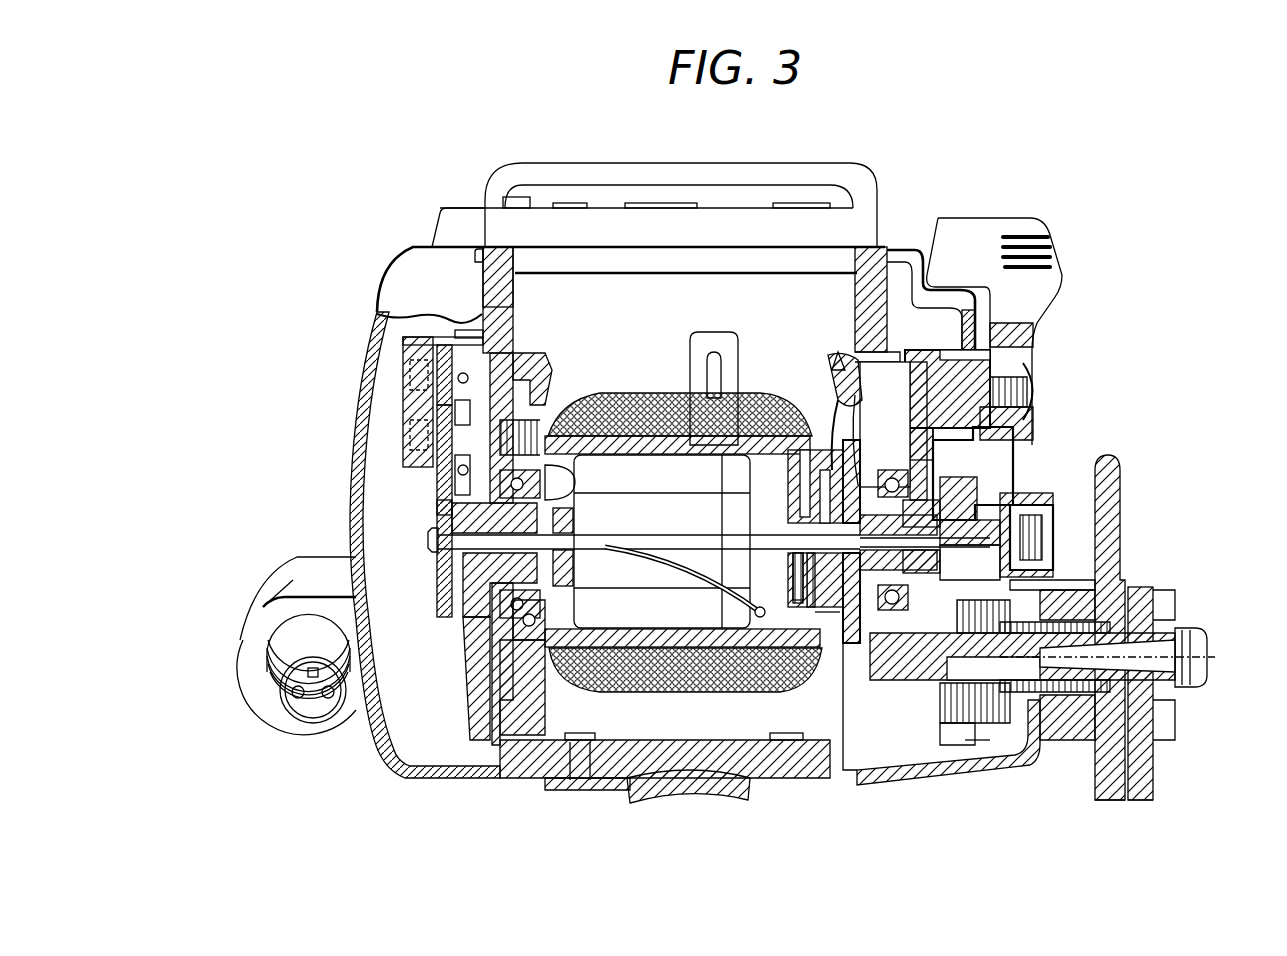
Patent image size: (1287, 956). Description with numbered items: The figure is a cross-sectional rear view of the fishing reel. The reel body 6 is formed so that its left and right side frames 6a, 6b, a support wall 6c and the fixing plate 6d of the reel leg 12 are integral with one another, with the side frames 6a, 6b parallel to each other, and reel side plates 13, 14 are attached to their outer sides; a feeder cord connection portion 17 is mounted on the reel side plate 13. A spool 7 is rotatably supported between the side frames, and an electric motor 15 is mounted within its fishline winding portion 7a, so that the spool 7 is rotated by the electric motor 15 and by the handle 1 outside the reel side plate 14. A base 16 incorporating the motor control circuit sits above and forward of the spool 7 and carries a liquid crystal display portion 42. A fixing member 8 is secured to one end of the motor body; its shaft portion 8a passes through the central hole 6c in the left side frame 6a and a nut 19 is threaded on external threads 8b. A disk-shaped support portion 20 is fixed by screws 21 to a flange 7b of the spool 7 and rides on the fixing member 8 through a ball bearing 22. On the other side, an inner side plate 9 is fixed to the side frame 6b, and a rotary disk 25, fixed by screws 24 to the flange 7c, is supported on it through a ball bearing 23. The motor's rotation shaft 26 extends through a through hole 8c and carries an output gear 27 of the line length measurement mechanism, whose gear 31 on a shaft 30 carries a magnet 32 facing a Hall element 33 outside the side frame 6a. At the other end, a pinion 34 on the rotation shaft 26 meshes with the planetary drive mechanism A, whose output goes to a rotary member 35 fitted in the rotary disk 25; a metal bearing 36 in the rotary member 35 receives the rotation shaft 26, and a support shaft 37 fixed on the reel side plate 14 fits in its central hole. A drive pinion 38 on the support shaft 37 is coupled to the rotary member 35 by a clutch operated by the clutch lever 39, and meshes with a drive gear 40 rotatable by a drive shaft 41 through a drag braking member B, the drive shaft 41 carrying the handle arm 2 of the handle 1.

The handle 1 is at (1155, 792).
The handle arm 2 is at (1150, 778).
The reel body 6 is at (434, 210).
The left side frame 6a is at (488, 263).
The right side frame 6b is at (870, 253).
The support wall 6c is at (443, 498).
The fixing plate 6d is at (533, 770).
The spool 7 is at (526, 348).
The fishline winding portion 7a is at (668, 440).
The flange 7b is at (542, 375).
The flange 7c is at (844, 352).
The fixing member 8 is at (548, 732).
The shaft portion 8a is at (437, 527).
The external threads 8b is at (440, 522).
The through hole 8c is at (470, 657).
The inner side plate 9 is at (908, 350).
The reel leg 12 is at (630, 793).
The reel side plate 13 is at (362, 370).
The reel side plate 14 is at (902, 250).
The electric motor 15 is at (620, 463).
The base 16 is at (450, 212).
The feeder cord connection portion 17 is at (267, 668).
The nut 19 is at (447, 588).
The support portion 20 is at (484, 249).
The screws 21 is at (468, 330).
The ball bearing 22 is at (488, 733).
The ball bearing 23 is at (838, 368).
The screws 24 is at (837, 378).
The rotary disk 25 is at (905, 737).
The rotation shaft 26 is at (428, 540).
The output gear 27 is at (440, 572).
The shaft 30 is at (470, 355).
The gear 31 is at (444, 350).
The magnet 32 is at (462, 400).
The Hall element 33 is at (418, 370).
The pinion 34 is at (796, 605).
The rotary member 35 is at (947, 507).
The metal bearing 36 is at (943, 490).
The support shaft 37 is at (1050, 513).
The drive pinion 38 is at (1125, 573).
The clutch lever 39 is at (1060, 279).
The drive gear 40 is at (957, 740).
The drive shaft 41 is at (1173, 668).
The liquid crystal display portion 42 is at (528, 197).
The drive mechanism A is at (824, 600).
The drag braking member B is at (977, 728).